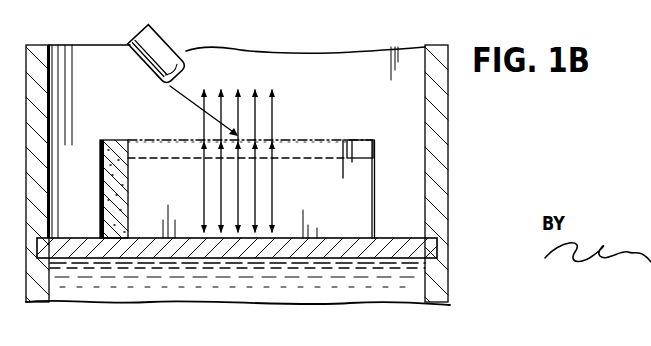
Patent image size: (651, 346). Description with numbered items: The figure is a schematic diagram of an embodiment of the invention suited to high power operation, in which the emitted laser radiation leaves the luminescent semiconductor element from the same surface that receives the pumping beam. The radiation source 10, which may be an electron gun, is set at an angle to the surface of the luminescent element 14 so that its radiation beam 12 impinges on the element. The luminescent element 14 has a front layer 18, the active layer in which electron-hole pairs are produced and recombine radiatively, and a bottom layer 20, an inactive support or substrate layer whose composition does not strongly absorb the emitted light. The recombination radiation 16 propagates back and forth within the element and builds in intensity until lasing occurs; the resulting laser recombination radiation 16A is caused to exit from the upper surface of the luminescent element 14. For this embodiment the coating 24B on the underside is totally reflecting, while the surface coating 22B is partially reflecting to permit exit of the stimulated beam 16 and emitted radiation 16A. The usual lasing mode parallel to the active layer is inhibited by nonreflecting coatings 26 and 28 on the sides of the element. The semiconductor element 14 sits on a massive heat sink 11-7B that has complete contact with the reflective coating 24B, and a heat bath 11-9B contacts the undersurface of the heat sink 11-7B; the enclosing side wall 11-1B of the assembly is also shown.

The radiation source 10 is at (167, 45).
The radiation beam 12 is at (193, 91).
The luminescent semiconductor element 14 is at (338, 101).
The recombination radiation 16 is at (272, 190).
The laser recombination radiation 16A is at (272, 105).
The front layer 18 is at (110, 140).
The bottom layer 20 is at (118, 194).
The surface coating 22B is at (334, 141).
The reflective coating 24B is at (335, 237).
The nonreflecting coating 26 is at (102, 163).
The nonreflecting coating 28 is at (375, 158).
The side wall 11-1B is at (442, 180).
The heat sink 11-7B is at (397, 247).
The heat bath 11-9B is at (412, 283).